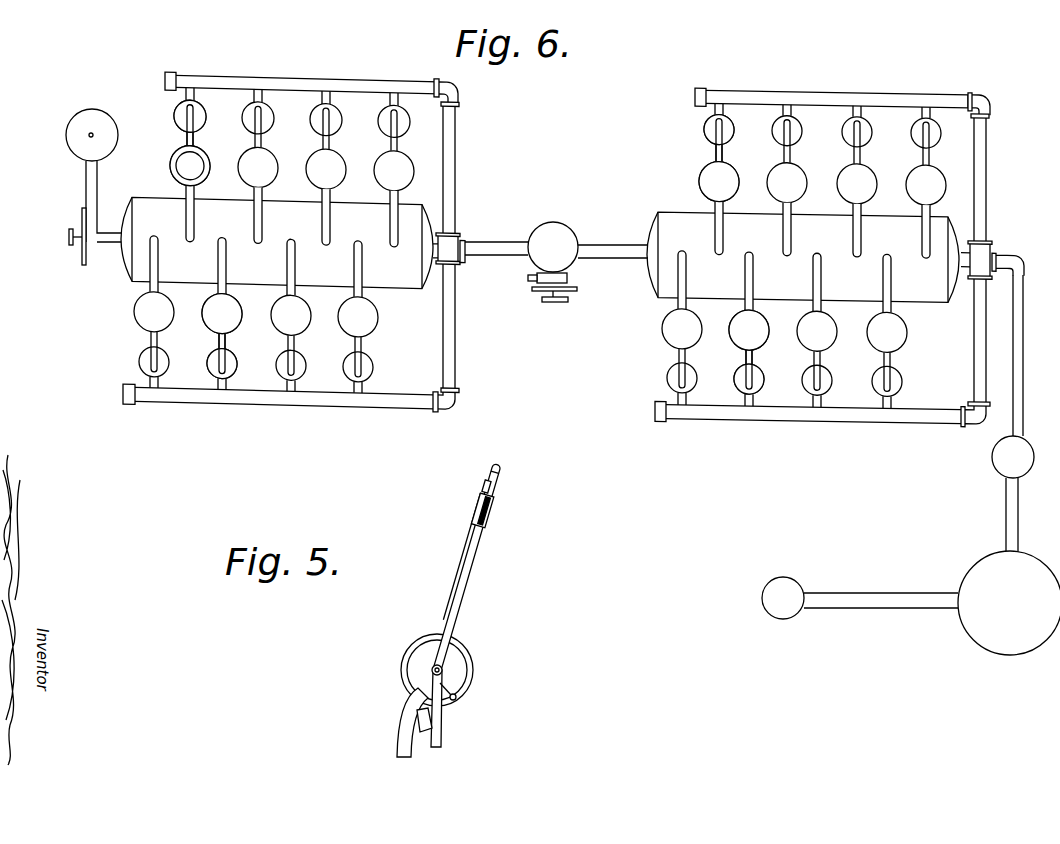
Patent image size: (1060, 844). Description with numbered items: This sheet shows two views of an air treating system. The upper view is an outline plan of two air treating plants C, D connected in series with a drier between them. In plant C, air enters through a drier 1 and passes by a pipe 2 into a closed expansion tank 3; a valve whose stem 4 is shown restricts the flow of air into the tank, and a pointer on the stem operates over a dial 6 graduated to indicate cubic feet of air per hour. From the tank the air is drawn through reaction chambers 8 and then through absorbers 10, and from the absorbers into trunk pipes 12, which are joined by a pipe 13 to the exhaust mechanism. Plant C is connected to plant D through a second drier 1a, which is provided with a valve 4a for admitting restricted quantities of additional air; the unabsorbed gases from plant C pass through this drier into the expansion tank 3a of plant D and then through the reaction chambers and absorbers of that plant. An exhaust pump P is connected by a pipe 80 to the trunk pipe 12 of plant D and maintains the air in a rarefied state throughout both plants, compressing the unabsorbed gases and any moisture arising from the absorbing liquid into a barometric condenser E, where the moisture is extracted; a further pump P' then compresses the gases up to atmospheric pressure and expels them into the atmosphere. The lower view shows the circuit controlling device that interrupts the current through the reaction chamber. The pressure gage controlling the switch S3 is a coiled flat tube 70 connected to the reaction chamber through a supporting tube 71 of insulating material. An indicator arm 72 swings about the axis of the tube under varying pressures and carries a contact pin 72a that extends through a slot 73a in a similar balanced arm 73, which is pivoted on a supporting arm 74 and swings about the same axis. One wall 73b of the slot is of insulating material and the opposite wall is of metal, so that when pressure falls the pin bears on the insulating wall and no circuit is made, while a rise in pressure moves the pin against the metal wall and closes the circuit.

In FIG. 6, the drier 1 is at (94, 119).
In FIG. 6, the pipe 2 is at (102, 177).
In FIG. 6, the valve stem 4 is at (70, 241).
In FIG. 6, the dial 6 is at (83, 268).
In FIG. 6, the reaction chamber 8 is at (210, 164).
In FIG. 6, the absorber 10 is at (242, 118).
In FIG. 6, the expansion tank 3 is at (277, 243).
In FIG. 6, the expansion tank 3a is at (803, 257).
In FIG. 6, the trunk pipe 12 is at (456, 302).
In FIG. 6, the pipe 13 is at (482, 247).
In FIG. 6, the drier 1a is at (560, 233).
In FIG. 6, the valve 4a is at (552, 308).
In FIG. 6, the pipe 80 is at (1023, 366).
In FIG. 6, the plant C is at (302, 65).
In FIG. 6, the plant D is at (833, 79).
In FIG. 6, the exhaust pump P is at (988, 468).
In FIG. 6, the pump P' is at (786, 580).
In FIG. 6, the barometric condenser E is at (1009, 603).
In FIG. 5, the coiled flat tube 70 is at (410, 643).
In FIG. 5, the supporting tube 71 is at (403, 708).
In FIG. 5, the indicator arm 72 is at (467, 549).
In FIG. 5, the contact pin 72a is at (482, 505).
In FIG. 5, the balanced arm 73 is at (473, 578).
In FIG. 5, the slot 73a is at (485, 485).
In FIG. 5, the insulating wall 73b is at (493, 520).
In FIG. 5, the supporting arm 74 is at (445, 669).
In FIG. 5, the switch S3 is at (520, 473).